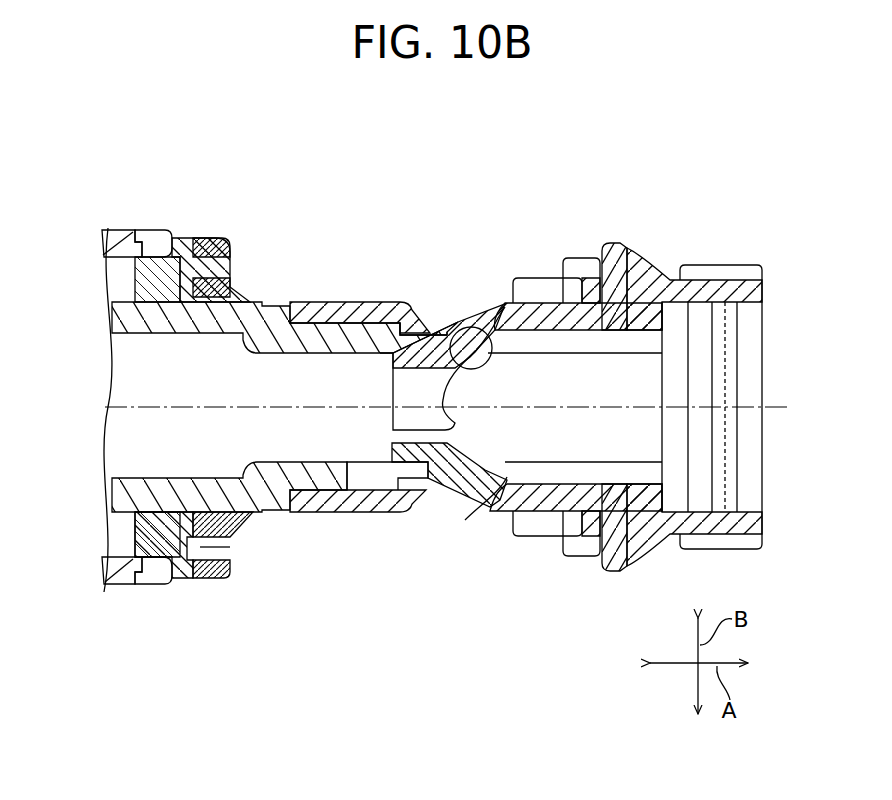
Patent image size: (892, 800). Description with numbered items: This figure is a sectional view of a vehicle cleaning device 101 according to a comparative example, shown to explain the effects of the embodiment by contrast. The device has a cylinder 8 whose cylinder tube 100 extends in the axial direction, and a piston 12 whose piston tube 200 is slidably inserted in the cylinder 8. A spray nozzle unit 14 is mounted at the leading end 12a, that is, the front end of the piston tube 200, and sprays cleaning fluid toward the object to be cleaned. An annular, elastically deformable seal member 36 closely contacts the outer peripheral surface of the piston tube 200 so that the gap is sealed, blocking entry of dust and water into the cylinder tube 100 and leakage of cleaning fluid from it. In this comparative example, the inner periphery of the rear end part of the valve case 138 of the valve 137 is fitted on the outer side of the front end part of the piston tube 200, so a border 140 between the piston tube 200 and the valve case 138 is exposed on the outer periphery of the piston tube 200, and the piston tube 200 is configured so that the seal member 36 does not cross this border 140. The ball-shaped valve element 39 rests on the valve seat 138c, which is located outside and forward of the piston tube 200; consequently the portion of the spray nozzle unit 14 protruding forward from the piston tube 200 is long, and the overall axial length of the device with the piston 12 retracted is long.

The cylinder tube 100 is at (133, 229).
The cylinder 8 is at (158, 226).
The piston tube 200 is at (238, 236).
The seal member 36 is at (208, 583).
The piston 12 is at (263, 296).
The leading end 12a is at (436, 326).
The border 140 is at (300, 293).
The valve element 39 is at (512, 484).
The valve seat 138c is at (488, 362).
The valve 137 is at (519, 264).
The valve case 138 is at (590, 302).
The spray nozzle unit 14 is at (646, 224).
The vehicle cleaning device 101 is at (703, 203).